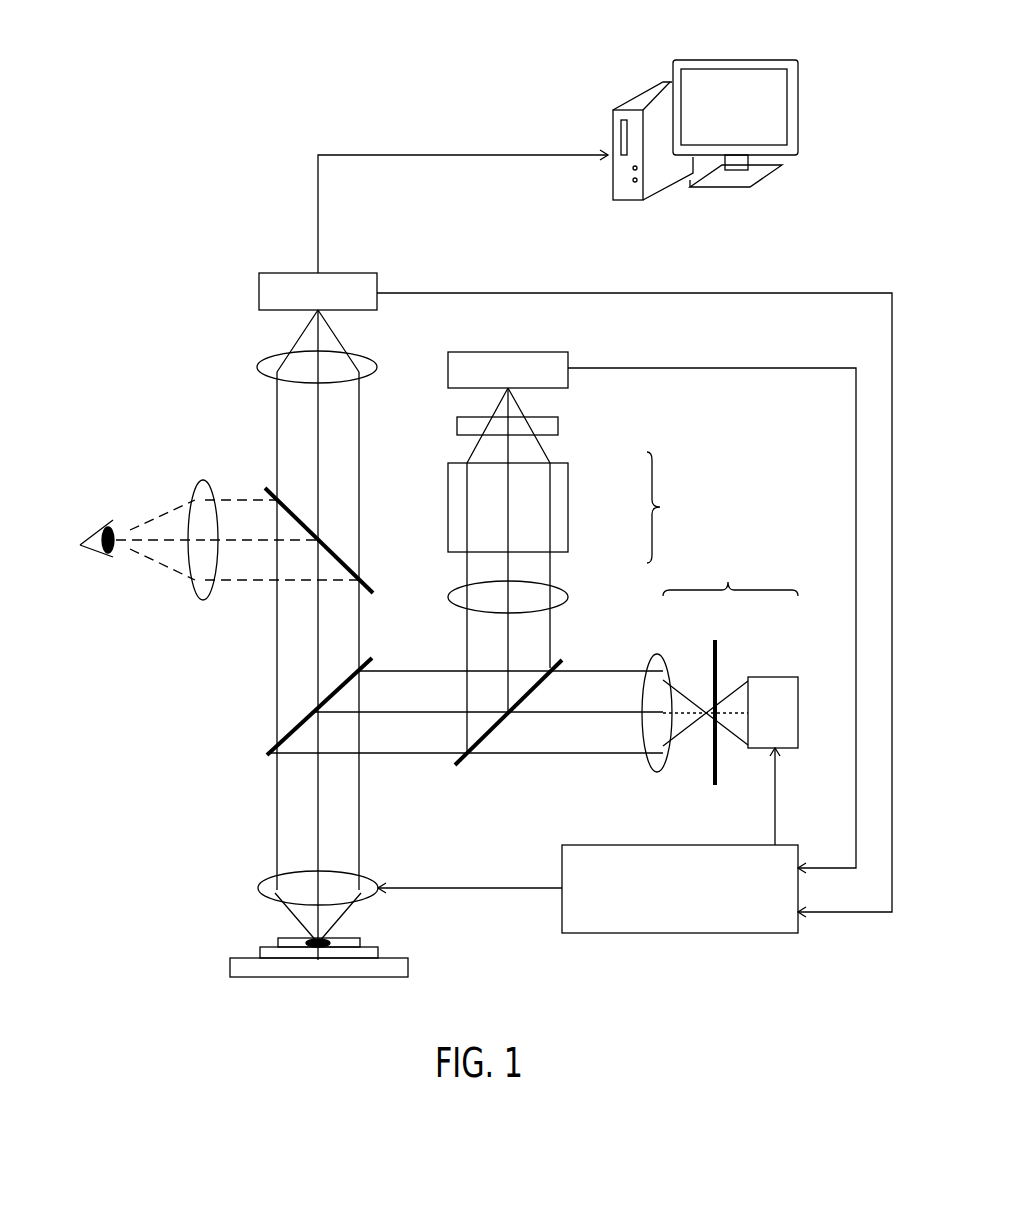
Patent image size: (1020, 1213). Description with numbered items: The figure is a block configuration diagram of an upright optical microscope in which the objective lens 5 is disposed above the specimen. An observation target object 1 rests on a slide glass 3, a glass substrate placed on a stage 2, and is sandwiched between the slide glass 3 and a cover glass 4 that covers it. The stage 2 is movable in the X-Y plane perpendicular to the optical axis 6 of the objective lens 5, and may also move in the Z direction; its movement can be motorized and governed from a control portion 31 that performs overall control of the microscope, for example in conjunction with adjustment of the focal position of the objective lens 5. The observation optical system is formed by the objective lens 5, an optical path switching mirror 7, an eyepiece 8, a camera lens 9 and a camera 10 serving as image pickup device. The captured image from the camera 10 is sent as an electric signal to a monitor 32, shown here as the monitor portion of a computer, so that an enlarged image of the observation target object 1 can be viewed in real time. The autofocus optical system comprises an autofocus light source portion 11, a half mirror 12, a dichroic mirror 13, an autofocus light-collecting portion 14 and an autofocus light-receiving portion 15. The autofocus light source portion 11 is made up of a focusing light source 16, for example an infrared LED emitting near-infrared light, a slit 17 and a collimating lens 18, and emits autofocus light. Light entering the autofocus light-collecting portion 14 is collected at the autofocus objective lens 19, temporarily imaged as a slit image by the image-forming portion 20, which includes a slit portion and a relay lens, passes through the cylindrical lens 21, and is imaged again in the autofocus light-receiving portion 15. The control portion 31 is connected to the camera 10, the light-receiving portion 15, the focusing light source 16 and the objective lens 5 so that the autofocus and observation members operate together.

The observation target object 1 is at (305, 940).
The stage 2 is at (408, 968).
The slide glass 3 is at (378, 953).
The cover glass 4 is at (355, 938).
The objective lens 5 is at (258, 888).
The optical axis 6 is at (318, 838).
The optical path switching mirror 7 is at (268, 486).
The eyepiece 8 is at (200, 481).
The camera lens 9 is at (258, 367).
The camera 10 is at (283, 273).
The autofocus light source portion 11 is at (730, 571).
The half mirror 12 is at (558, 660).
The dichroic mirror 13 is at (268, 753).
The autofocus light-collecting portion 14 is at (671, 507).
The autofocus light-receiving portion 15 is at (545, 352).
The focusing light source 16 is at (780, 677).
The slit 17 is at (718, 655).
The collimating lens 18 is at (660, 658).
The autofocus objective lens 19 is at (568, 597).
The image-forming portion 20 is at (568, 505).
The cylindrical lens 21 is at (558, 425).
The control portion 31 is at (612, 933).
The monitor 32 is at (765, 60).